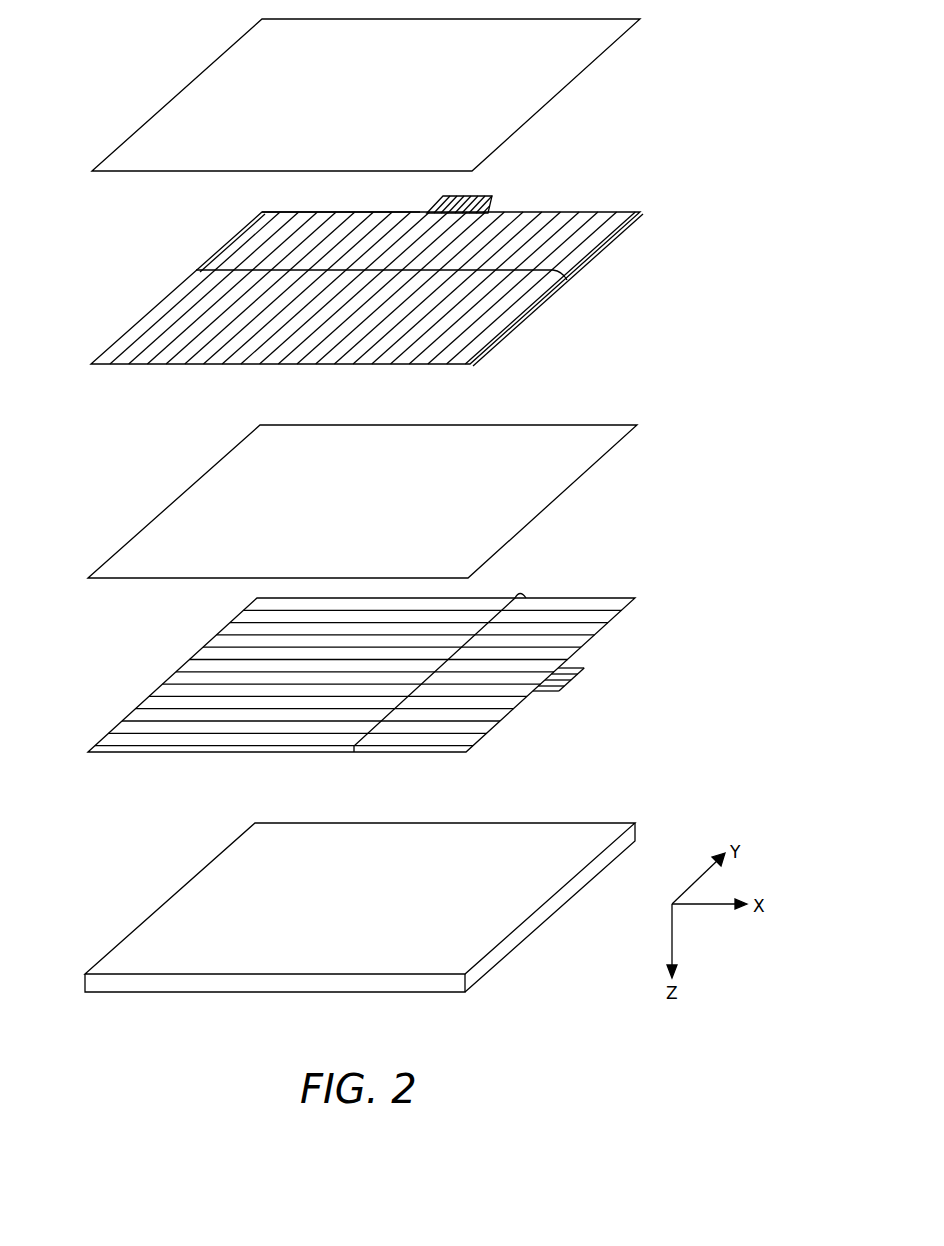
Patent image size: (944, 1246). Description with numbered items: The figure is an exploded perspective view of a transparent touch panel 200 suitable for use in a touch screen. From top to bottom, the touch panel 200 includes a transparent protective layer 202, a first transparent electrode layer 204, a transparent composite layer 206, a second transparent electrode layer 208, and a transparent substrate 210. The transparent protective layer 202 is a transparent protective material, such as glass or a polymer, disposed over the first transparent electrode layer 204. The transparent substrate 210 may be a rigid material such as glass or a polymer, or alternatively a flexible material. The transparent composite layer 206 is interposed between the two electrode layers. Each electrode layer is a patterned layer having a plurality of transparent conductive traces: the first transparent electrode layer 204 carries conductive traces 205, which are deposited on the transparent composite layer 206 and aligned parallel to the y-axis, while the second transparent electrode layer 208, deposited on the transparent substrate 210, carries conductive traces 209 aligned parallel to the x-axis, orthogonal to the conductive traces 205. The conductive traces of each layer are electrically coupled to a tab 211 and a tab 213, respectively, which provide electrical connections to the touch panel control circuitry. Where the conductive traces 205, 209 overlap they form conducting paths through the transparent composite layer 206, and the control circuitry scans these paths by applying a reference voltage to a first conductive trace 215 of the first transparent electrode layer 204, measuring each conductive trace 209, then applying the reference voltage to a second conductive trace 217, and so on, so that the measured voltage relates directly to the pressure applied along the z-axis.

The transparent touch panel 200 is at (672, 320).
The transparent protective layer 202 is at (174, 89).
The first transparent electrode layer 204 is at (151, 310).
The transparent conductive traces 205 is at (386, 271).
The transparent composite layer 206 is at (175, 499).
The second transparent electrode layer 208 is at (175, 673).
The conductive traces 209 is at (447, 662).
The transparent substrate 210 is at (172, 894).
The tab 211 is at (480, 195).
The tab 213 is at (578, 672).
The first conductive trace 215 is at (241, 239).
The second conductive trace 217 is at (283, 212).